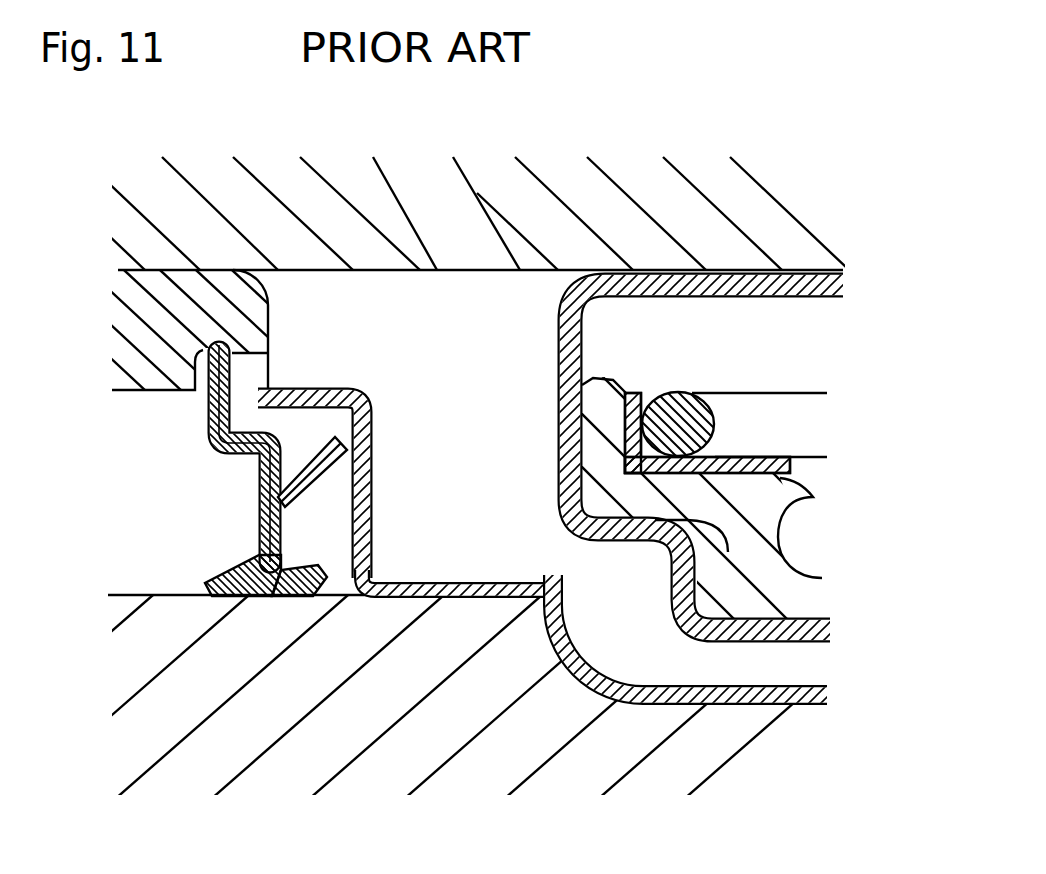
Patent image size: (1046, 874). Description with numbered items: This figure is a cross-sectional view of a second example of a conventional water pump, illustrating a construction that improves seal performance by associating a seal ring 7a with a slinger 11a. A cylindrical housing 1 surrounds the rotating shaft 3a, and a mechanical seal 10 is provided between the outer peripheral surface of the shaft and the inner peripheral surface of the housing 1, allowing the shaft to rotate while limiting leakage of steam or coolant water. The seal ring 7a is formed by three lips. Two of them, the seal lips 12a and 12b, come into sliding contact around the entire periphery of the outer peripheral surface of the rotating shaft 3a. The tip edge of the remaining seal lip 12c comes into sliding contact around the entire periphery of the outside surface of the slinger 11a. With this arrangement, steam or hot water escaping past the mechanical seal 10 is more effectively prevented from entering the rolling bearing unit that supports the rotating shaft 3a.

The housing 1 is at (567, 204).
The rotating shaft 3a is at (190, 717).
The seal ring 7a is at (257, 487).
The mechanical seal 10 is at (813, 497).
The slinger 11a is at (472, 590).
The seal lip 12a is at (200, 576).
The seal lip 12b is at (299, 587).
The seal lip 12c is at (348, 437).